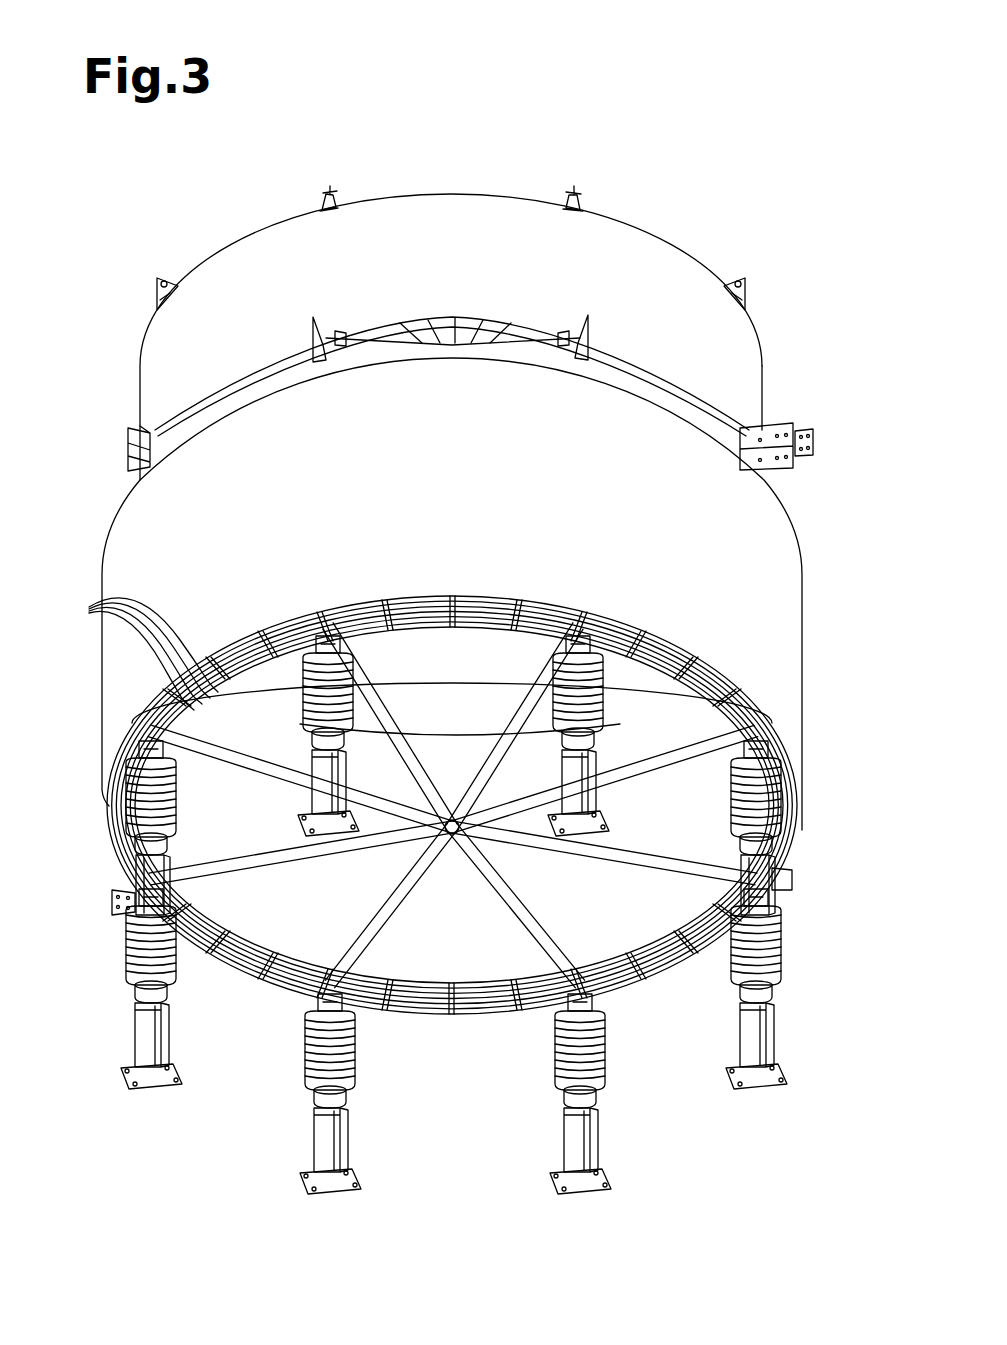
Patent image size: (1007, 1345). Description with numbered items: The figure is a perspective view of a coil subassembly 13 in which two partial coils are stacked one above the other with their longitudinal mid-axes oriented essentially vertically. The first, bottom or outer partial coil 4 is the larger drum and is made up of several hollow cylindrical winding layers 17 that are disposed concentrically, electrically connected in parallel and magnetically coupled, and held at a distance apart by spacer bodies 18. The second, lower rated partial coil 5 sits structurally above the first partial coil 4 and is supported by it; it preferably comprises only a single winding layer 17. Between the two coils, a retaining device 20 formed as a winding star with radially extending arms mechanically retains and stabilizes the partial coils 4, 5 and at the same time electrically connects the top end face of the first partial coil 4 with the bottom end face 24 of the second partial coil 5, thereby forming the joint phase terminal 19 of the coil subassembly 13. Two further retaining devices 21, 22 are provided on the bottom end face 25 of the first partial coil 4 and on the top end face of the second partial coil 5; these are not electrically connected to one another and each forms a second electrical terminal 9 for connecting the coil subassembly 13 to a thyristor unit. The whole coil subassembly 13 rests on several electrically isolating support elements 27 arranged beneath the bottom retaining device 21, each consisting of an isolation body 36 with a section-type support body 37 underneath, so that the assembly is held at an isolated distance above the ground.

The first partial coil 4 is at (808, 620).
The second partial coil 5 is at (769, 352).
The second electrical terminal 9 is at (107, 918).
The coil subassembly 13 is at (724, 108).
The winding layer 17 is at (402, 232).
The spacer body 18 is at (165, 688).
The joint phase terminal 19 is at (817, 423).
The retaining device 20 is at (125, 443).
The bottom retaining device 21 is at (460, 852).
The top retaining device 22 is at (146, 284).
The bottom end face of the second partial coil 24 is at (650, 355).
The bottom end face of the first partial coil 25 is at (792, 840).
The electrically isolating support element 27 is at (300, 1092).
The isolation body 36 is at (612, 1062).
The support body 37 is at (578, 1146).